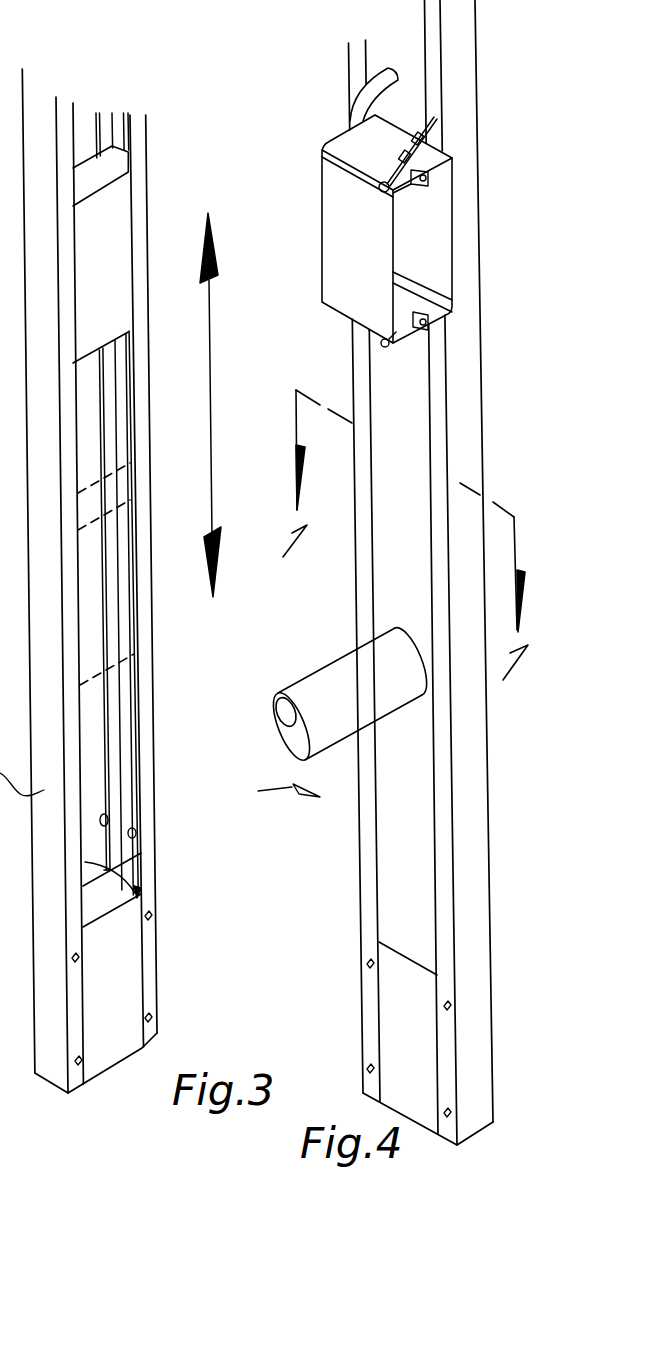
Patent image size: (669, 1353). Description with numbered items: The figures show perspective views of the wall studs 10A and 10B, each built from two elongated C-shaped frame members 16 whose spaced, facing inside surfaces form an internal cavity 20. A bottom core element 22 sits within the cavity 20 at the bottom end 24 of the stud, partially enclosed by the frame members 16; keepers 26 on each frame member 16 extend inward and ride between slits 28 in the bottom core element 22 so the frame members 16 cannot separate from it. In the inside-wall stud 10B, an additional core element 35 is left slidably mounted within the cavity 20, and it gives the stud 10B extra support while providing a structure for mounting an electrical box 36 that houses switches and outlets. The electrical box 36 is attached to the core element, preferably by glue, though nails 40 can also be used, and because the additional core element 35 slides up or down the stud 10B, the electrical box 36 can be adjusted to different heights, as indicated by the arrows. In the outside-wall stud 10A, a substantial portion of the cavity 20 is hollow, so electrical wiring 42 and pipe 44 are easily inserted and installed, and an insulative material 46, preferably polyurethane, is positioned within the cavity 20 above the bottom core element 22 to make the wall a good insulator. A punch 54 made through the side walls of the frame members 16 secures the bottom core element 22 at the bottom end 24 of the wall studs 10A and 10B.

In FIG. 4, the wall stud 10A is at (271, 798).
In FIG. 3, the wall stud 10B is at (205, 156).
In FIG. 3, the frame member 16 is at (140, 390).
In FIG. 4, the frame member 16 is at (354, 588).
In FIG. 3, the internal cavity 20 is at (90, 758).
In FIG. 3, the bottom core element 22 is at (125, 985).
In FIG. 4, the bottom core element 22 is at (393, 985).
In FIG. 3, the bottom end 24 is at (50, 1087).
In FIG. 4, the bottom end 24 is at (473, 1138).
In FIG. 3, the keeper 26 is at (106, 824).
In FIG. 3, the slit 28 is at (138, 892).
In FIG. 3, the additional core element 35 is at (110, 246).
In FIG. 4, the electrical box 36 is at (342, 265).
In FIG. 4, the nail 40 is at (388, 162).
In FIG. 4, the electrical wiring 42 is at (362, 100).
In FIG. 4, the pipe 44 is at (303, 690).
In FIG. 4, the insulative material 46 is at (393, 865).
In FIG. 3, the punch 54 is at (150, 918).
In FIG. 4, the punch 54 is at (368, 1068).